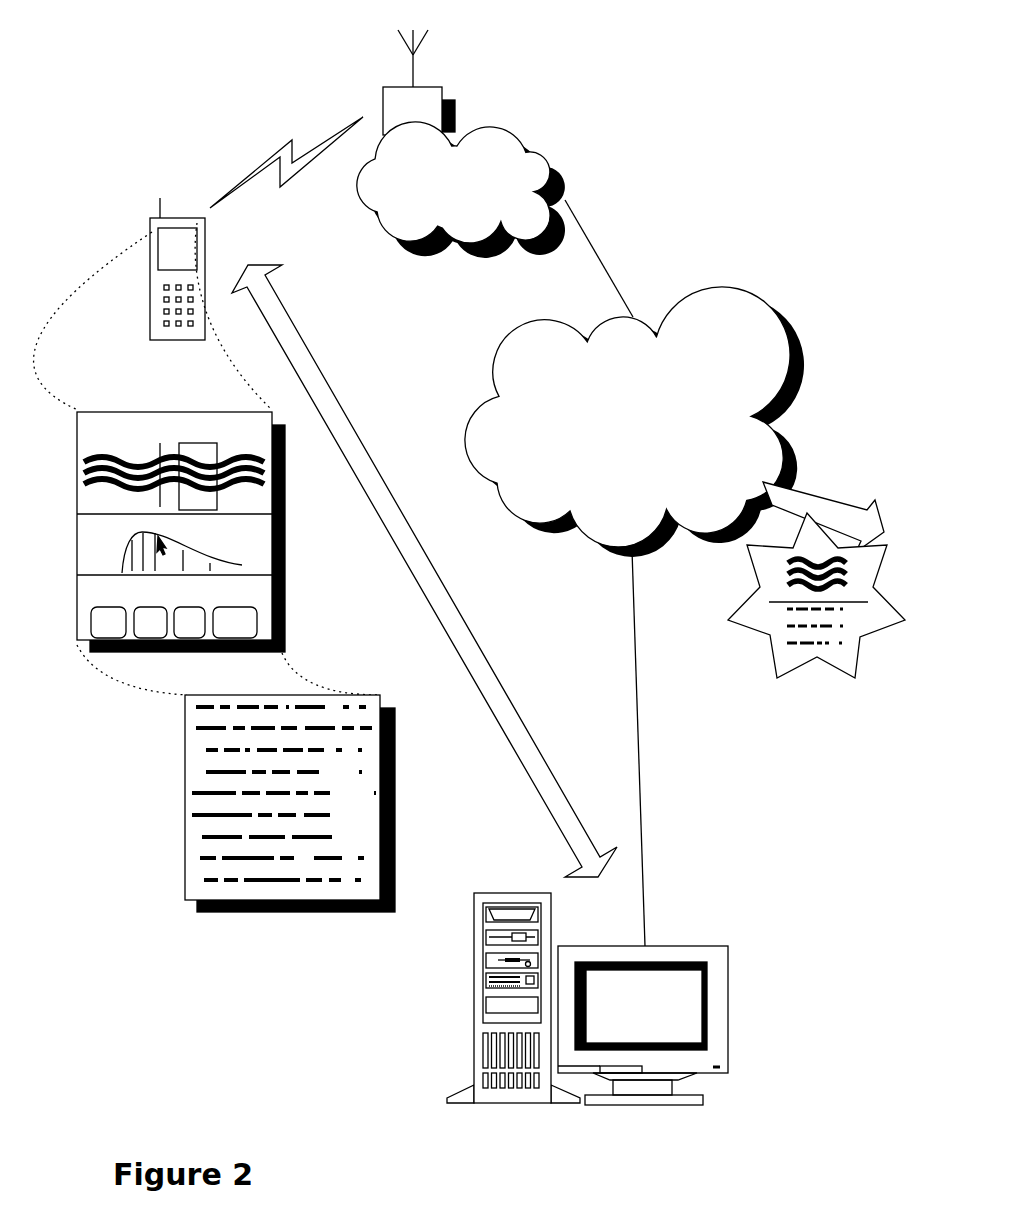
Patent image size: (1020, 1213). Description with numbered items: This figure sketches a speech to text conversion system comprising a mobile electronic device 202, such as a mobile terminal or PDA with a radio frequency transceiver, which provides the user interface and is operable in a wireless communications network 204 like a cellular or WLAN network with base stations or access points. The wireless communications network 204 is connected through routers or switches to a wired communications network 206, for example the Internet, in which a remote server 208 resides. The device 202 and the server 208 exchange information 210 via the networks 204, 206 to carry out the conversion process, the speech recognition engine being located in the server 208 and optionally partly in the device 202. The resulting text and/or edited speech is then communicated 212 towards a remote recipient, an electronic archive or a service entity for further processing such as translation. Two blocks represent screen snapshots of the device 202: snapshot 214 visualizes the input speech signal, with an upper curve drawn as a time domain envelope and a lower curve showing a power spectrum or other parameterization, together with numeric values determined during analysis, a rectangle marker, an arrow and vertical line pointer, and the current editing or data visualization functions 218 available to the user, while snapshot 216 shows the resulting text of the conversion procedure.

The mobile electronic device 202 is at (151, 217).
The wireless communications network 204 is at (383, 87).
The communications network 206 is at (493, 349).
The server 208 is at (542, 898).
The information exchange 210 is at (392, 480).
The communication of resulting text and/or edited speech 212 is at (858, 508).
The screen snapshot 214 is at (285, 483).
The screen snapshot 216 is at (184, 815).
The editing or data visualization functions 218 is at (90, 636).